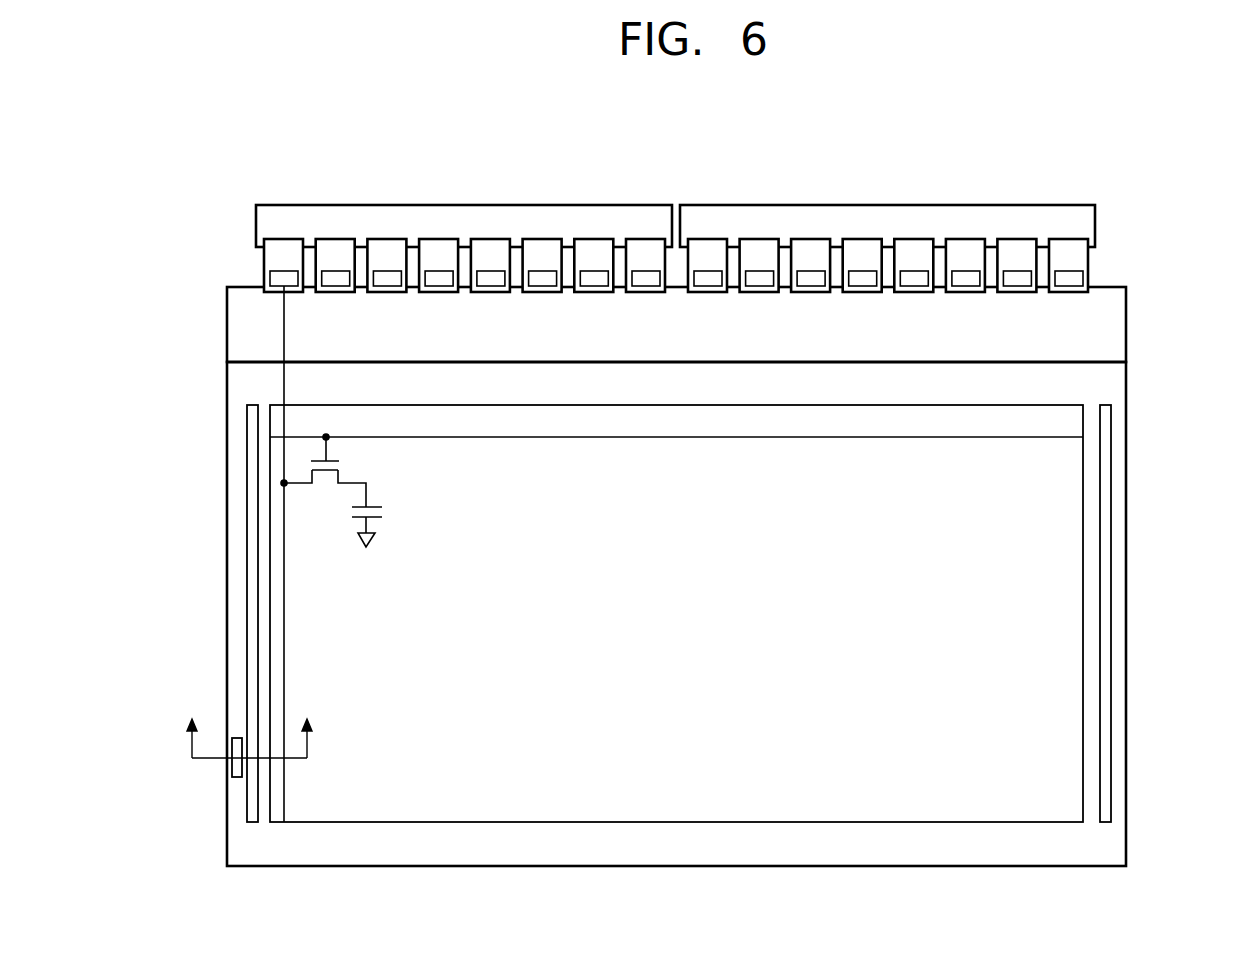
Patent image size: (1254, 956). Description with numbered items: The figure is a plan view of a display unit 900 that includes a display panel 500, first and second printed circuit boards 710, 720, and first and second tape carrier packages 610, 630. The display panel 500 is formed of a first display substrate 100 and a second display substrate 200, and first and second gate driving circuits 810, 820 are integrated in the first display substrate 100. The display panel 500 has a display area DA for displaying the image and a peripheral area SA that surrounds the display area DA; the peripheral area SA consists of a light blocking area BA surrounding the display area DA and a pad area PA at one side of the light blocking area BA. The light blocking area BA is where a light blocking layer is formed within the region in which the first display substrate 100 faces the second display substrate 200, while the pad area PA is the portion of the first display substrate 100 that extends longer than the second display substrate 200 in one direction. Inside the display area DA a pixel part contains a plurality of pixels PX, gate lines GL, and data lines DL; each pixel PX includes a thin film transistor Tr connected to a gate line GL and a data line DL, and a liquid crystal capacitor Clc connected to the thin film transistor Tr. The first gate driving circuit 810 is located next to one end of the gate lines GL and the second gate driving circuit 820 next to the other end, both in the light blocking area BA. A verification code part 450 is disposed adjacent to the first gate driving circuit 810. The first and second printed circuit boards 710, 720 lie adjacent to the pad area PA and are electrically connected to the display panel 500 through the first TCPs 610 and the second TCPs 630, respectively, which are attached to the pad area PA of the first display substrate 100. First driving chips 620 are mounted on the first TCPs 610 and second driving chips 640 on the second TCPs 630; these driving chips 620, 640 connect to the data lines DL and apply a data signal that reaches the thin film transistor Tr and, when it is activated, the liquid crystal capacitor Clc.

The display unit 900 is at (1145, 164).
The display panel 500 is at (141, 315).
The first display substrate 100 is at (227, 324).
The second display substrate 200 is at (227, 389).
The first printed circuit board 710 is at (256, 228).
The second printed circuit board 720 is at (1095, 228).
The first tape carrier package 610 is at (264, 255).
The first driving chip 620 is at (270, 277).
The second tape carrier package 630 is at (1088, 255).
The second driving chip 640 is at (1082, 277).
The first gate driving circuit 810 is at (247, 612).
The second gate driving circuit 820 is at (1111, 612).
The verification code part 450 is at (232, 768).
The pad area PA is at (1105, 318).
The light blocking area BA is at (1105, 377).
The peripheral area SA is at (1196, 313).
The display area DA is at (1061, 510).
The gate line GL is at (775, 439).
The data line DL is at (285, 583).
The pixel PX is at (470, 462).
The thin film transistor Tr is at (356, 473).
The liquid crystal capacitor Clc is at (392, 510).